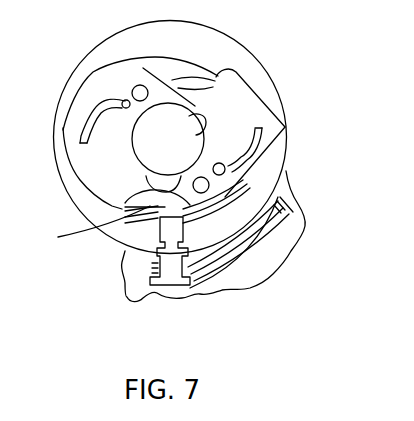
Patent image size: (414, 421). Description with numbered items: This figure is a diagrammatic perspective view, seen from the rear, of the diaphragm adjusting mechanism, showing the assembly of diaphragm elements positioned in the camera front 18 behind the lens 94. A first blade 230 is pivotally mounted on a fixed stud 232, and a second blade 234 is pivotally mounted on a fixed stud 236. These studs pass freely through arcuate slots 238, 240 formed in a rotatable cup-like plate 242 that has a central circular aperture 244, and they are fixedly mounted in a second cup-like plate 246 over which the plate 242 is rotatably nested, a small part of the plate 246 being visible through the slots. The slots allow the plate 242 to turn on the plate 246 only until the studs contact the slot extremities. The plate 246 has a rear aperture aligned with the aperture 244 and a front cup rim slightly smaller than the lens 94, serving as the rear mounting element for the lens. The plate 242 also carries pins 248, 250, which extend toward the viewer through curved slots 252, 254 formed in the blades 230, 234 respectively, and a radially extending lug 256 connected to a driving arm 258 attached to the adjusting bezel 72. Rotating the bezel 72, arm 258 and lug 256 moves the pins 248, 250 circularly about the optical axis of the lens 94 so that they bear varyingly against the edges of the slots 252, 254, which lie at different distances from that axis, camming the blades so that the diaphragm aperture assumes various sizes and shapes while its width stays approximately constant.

The camera front 18 is at (293, 245).
The adjusting bezel 72 is at (232, 246).
The lens 94 is at (173, 138).
The first blade 230 is at (123, 155).
The fixed stud 232 is at (139, 85).
The second blade 234 is at (245, 136).
The fixed stud 236 is at (209, 186).
The arcuate slot 238 is at (182, 78).
The arcuate slot 240 is at (148, 196).
The rotatable cup-like plate 242 is at (160, 233).
The central circular aperture 244 is at (207, 115).
The second cup-like plate 246 is at (218, 80).
The pin 248 is at (122, 99).
The pin 250 is at (218, 163).
The curved slot 252 is at (82, 140).
The curved slot 254 is at (262, 130).
The radially extending lug 256 is at (158, 229).
The driving arm 258 is at (178, 268).